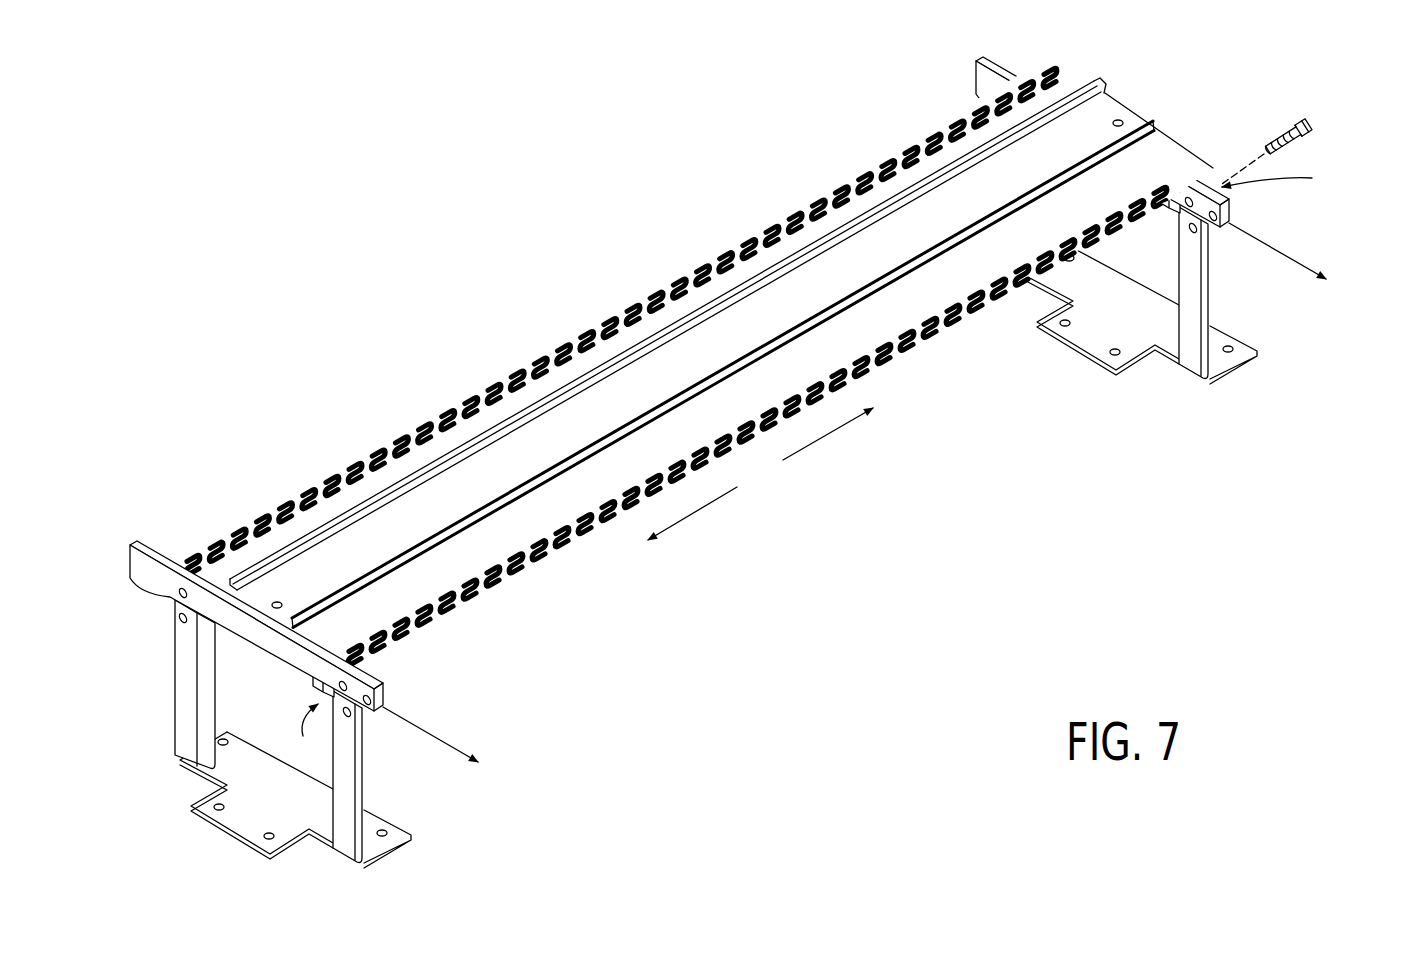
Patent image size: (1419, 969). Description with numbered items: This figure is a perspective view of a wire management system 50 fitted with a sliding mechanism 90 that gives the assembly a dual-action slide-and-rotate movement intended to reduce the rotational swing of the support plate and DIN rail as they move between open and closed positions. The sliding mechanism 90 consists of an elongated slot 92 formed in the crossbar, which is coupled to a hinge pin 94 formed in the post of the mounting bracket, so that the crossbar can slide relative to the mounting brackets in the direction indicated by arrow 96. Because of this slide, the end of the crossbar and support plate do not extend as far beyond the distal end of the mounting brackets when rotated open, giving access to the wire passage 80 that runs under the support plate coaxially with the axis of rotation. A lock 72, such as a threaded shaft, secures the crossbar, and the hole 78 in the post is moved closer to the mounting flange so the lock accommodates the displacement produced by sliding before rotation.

The wire management system 50 is at (1189, 82).
The lock 72 is at (1306, 114).
The hole 78 is at (350, 773).
The wire passage 80 is at (760, 474).
The sliding mechanism 90 is at (817, 465).
The elongated slot 92 is at (316, 690).
The hinge pin 94 is at (372, 676).
The arrow 96 is at (445, 747).